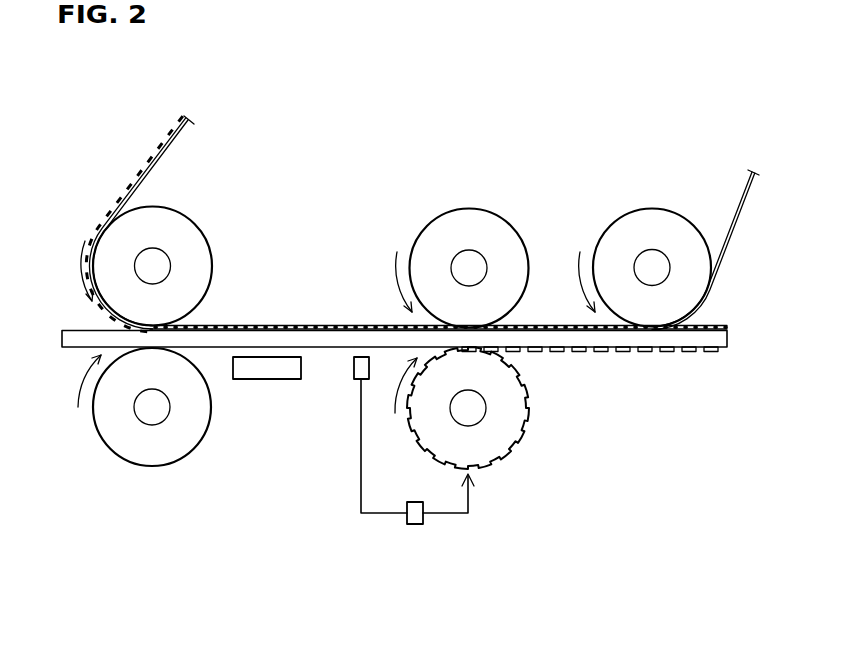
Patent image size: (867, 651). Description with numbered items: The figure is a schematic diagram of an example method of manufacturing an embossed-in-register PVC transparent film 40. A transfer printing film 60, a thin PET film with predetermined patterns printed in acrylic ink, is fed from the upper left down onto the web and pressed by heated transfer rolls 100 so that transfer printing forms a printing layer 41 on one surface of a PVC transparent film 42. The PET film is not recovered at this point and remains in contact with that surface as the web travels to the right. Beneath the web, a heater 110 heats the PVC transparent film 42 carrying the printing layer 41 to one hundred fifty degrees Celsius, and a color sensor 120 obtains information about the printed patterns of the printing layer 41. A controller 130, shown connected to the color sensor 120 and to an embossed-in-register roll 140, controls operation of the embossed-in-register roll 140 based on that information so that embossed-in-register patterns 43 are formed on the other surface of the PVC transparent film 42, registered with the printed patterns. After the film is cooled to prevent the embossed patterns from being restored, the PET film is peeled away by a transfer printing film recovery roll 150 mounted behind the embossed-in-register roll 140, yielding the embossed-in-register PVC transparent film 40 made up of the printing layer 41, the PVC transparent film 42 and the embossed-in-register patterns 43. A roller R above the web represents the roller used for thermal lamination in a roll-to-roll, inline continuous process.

The embossed-in-register PVC transparent film 40 is at (452, 330).
The printing layer 41 is at (717, 329).
The PVC transparent film 42 is at (729, 336).
The embossed-in-register patterns 43 is at (627, 365).
The transfer printing film 60 is at (174, 137).
The transfer rolls 100 is at (193, 222).
The heater 110 is at (249, 381).
The color sensor 120 is at (353, 367).
The controller 130 is at (414, 527).
The embossed-in-register roll 140 is at (518, 440).
The transfer printing film recovery roll 150 is at (647, 218).
The roller R is at (466, 218).